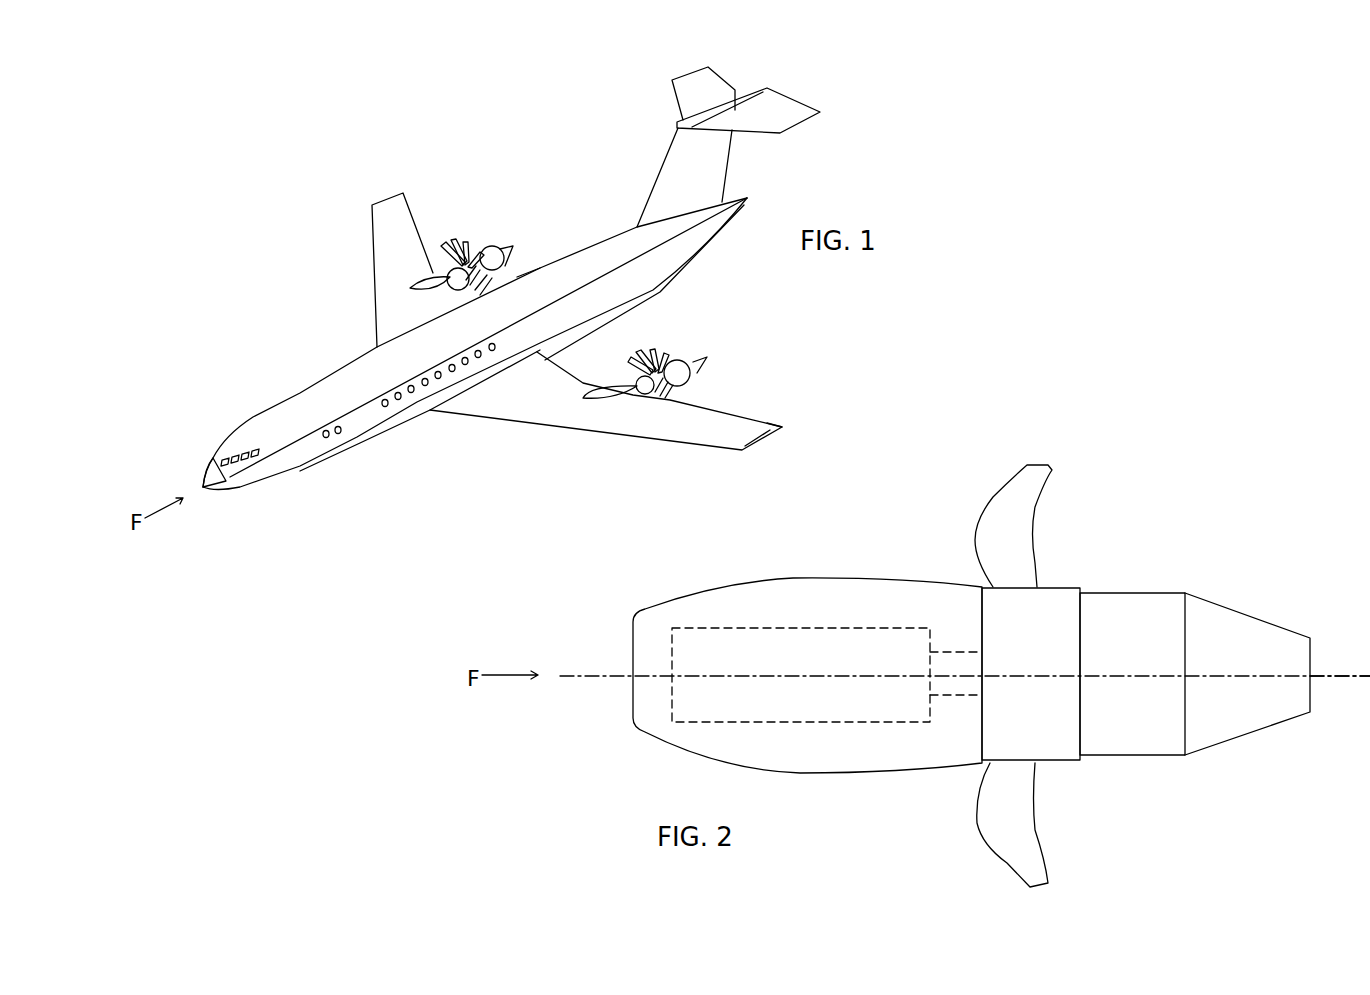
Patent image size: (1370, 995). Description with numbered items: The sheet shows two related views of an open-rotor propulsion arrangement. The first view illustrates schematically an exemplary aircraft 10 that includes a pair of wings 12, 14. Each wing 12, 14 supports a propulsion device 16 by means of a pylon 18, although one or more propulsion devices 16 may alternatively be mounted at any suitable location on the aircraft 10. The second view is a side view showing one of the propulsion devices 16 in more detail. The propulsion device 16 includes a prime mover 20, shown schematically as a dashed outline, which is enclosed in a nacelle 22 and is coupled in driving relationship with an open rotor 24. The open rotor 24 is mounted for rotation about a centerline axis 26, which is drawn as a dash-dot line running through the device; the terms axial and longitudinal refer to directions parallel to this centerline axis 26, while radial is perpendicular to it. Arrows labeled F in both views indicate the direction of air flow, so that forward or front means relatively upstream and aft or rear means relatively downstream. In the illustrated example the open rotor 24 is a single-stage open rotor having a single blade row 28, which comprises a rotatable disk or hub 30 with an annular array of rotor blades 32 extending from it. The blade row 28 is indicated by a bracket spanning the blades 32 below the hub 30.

In FIG. 1, the aircraft 10 is at (436, 148).
In FIG. 1, the wing 12 is at (497, 407).
In FIG. 1, the wing 14 is at (385, 268).
In FIG. 1, the propulsion device 16 is at (480, 212).
In FIG. 2, the propulsion device 16 is at (1220, 502).
In FIG. 1, the pylon 18 is at (428, 242).
In FIG. 2, the prime mover 20 is at (713, 730).
In FIG. 2, the nacelle 22 is at (662, 607).
In FIG. 2, the open rotor 24 is at (1069, 539).
In FIG. 2, the centerline axis 26 is at (1348, 675).
In FIG. 2, the blade row 28 is at (1013, 701).
In FIG. 2, the hub 30 is at (1057, 607).
In FIG. 2, the rotor blades 32 is at (1007, 500).